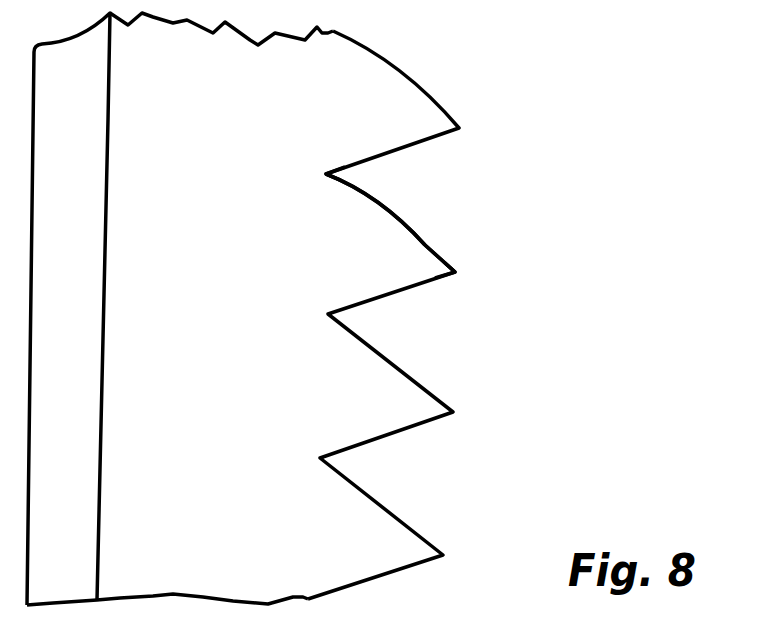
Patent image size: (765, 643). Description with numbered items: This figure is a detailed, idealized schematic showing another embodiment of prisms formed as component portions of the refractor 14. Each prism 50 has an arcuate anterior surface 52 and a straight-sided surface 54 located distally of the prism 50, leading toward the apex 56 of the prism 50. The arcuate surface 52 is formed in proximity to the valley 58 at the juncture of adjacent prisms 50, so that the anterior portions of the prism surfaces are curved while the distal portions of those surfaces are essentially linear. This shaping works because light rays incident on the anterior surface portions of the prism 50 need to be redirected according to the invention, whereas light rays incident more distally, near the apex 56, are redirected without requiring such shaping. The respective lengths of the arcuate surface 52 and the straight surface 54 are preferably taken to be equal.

The refractor 14 is at (172, 263).
The prism 50 is at (448, 92).
The arcuate anterior surface 52 is at (379, 195).
The straight-sided surface 54 is at (428, 243).
The apex 56 is at (459, 273).
The valley 58 is at (309, 173).